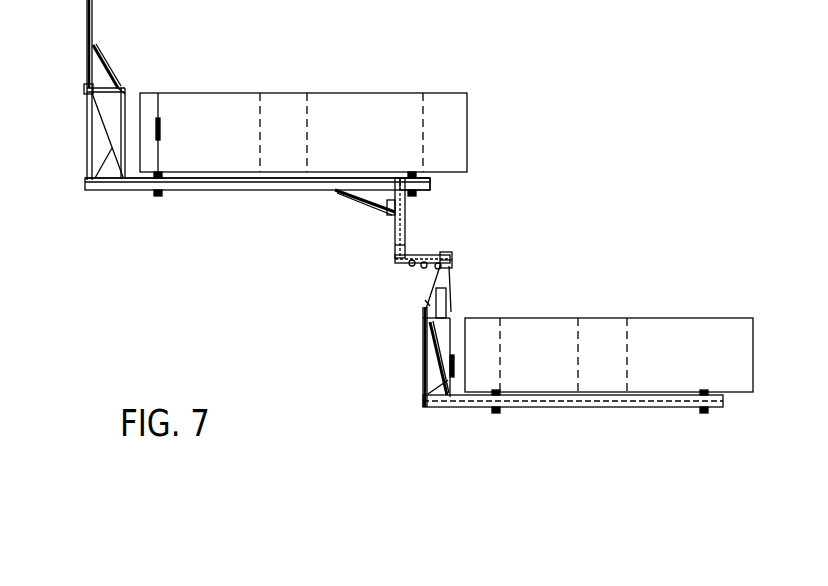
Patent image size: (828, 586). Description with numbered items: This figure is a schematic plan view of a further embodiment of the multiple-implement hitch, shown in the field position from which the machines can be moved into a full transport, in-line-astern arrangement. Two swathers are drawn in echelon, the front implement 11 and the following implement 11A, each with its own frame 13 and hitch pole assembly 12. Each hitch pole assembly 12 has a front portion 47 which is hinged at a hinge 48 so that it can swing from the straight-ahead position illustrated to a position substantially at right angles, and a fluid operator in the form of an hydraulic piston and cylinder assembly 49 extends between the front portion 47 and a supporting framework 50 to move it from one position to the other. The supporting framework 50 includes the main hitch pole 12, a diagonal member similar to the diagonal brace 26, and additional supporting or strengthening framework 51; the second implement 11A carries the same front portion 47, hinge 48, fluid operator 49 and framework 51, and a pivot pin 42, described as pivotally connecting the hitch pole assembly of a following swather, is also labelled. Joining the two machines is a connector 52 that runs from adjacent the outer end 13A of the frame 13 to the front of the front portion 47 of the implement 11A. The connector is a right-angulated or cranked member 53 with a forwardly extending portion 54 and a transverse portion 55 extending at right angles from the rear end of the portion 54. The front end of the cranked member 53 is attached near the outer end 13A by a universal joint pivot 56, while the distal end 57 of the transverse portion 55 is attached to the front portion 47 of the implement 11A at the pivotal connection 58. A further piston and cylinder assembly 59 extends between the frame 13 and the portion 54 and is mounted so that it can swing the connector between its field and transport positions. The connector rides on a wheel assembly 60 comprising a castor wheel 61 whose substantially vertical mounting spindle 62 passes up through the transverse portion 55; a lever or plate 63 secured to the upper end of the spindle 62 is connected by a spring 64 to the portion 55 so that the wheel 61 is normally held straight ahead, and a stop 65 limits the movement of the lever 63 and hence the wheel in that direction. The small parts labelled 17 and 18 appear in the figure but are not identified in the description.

The implement 11 is at (216, 82).
The second implement 11A is at (565, 318).
The hitch pole assembly 12 is at (88, 150).
The frame 13 is at (235, 190).
The outer end of the frame 13A is at (366, 190).
The connector 17 is at (418, 174).
The connector 18 is at (158, 194).
The diagonal brace 26 is at (92, 184).
The pivot pin 42 is at (432, 380).
The front portion 47 is at (92, 30).
The hinge 48 is at (87, 92).
The hydraulic piston and cylinder assembly 49 is at (108, 70).
The supporting framework 50 is at (121, 100).
The additional supporting framework 51 is at (125, 130).
The connector 52 is at (395, 247).
The cranked member 53 is at (392, 212).
The forwardly extending portion 54 is at (394, 237).
The transverse portion 55 is at (450, 232).
The universal joint pivot 56 is at (410, 172).
The distal end 57 is at (449, 278).
The pivotal connection 58 is at (447, 292).
The piston and cylinder assembly 59 is at (372, 205).
The wheel assembly 60 is at (420, 302).
The castor wheel 61 is at (448, 255).
The mounting spindle 62 is at (450, 263).
The lever 63 is at (438, 270).
The spring 64 is at (422, 268).
The stop 65 is at (410, 264).